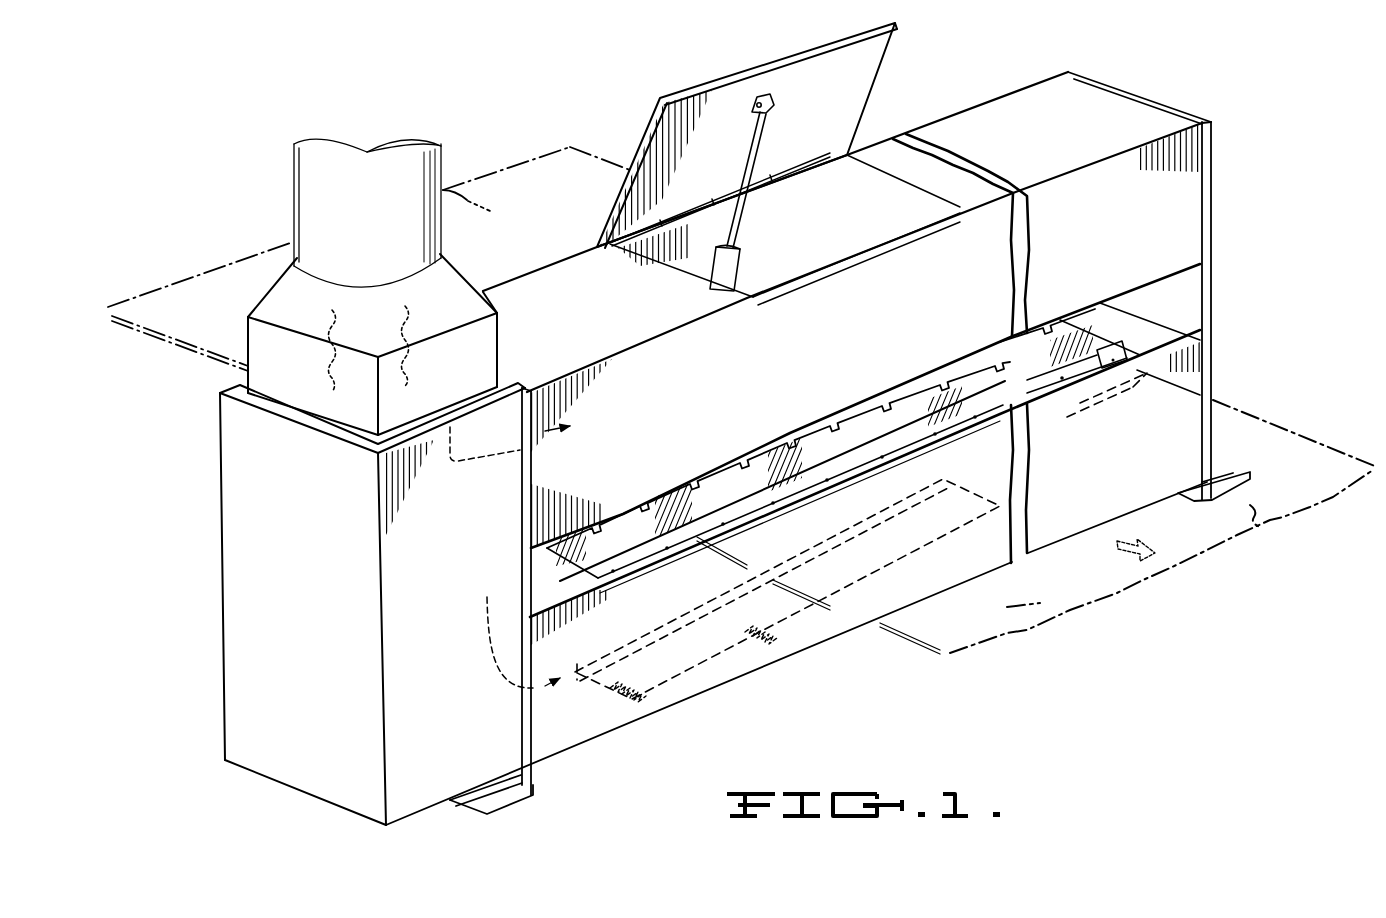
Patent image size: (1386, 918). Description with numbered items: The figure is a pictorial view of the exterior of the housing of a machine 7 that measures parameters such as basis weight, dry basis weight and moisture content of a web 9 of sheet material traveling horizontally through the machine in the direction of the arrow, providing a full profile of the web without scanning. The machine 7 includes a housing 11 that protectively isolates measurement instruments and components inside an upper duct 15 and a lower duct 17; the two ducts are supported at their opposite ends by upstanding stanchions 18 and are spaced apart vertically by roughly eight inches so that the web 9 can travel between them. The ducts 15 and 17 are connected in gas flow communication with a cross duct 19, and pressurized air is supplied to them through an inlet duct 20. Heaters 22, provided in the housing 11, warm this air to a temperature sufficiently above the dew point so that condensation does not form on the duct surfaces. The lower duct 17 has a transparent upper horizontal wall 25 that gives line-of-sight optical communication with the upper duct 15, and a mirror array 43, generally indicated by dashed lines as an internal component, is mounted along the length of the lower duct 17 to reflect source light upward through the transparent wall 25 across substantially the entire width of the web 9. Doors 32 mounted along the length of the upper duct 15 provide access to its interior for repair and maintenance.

The machine 7 is at (544, 121).
The web 9 is at (913, 529).
The housing 11 is at (549, 257).
The duct 15 is at (625, 431).
The duct 17 is at (621, 624).
The stanchions 18 is at (1212, 303).
The cross duct 19 is at (437, 557).
The inlet duct 20 is at (294, 170).
The heaters 22 is at (314, 379).
The transparent wall 25 is at (838, 456).
The doors 32 is at (752, 82).
The mirror array 43 is at (1086, 419).